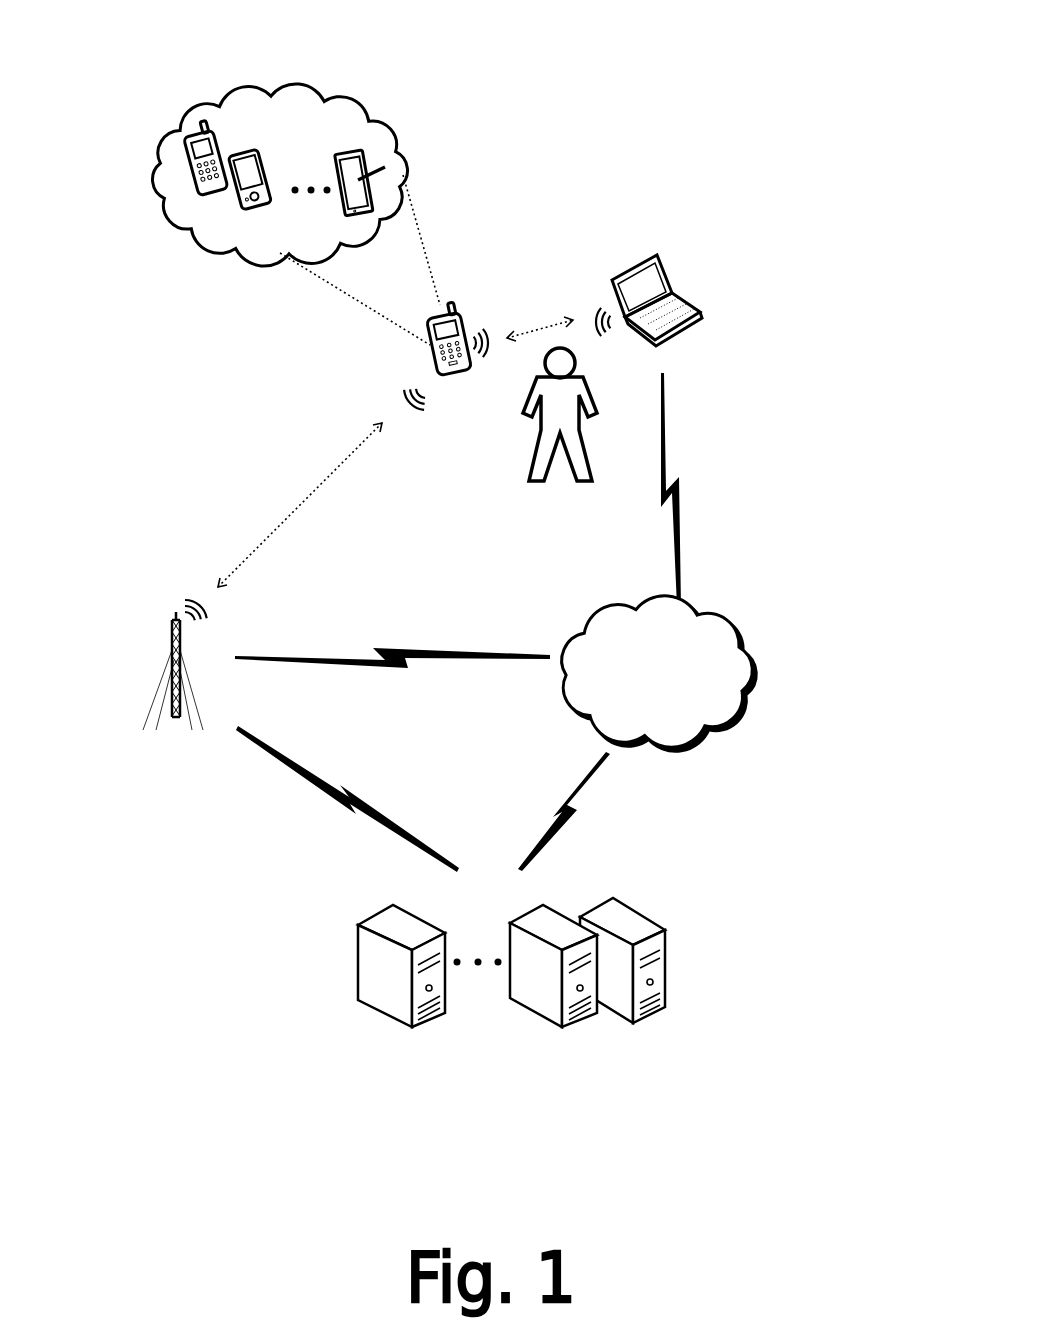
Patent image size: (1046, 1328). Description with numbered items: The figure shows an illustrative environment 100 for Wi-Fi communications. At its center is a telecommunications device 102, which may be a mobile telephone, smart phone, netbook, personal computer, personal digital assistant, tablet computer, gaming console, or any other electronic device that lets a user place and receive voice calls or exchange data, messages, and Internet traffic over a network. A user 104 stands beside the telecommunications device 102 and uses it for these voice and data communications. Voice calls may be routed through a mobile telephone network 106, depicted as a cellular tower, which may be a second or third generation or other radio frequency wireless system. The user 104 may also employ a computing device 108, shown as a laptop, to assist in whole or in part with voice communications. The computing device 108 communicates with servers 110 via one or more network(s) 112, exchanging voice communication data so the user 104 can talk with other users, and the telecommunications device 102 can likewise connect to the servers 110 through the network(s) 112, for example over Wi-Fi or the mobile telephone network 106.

The environment 100 is at (790, 60).
The telecommunications device 102 is at (458, 275).
The user 104 is at (518, 480).
The mobile telephone network 106 is at (157, 595).
The computing device 108 is at (688, 277).
The servers 110 is at (360, 888).
The network(s) 112 is at (707, 613).